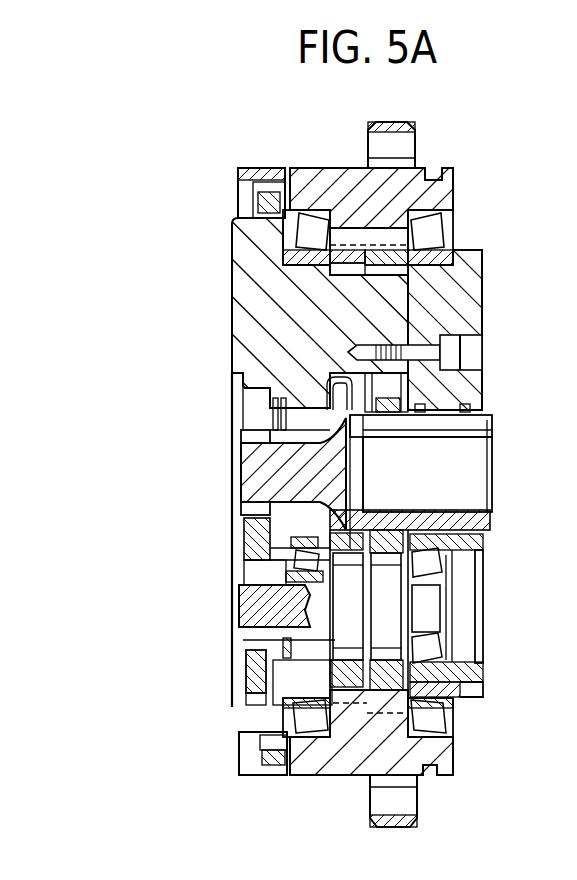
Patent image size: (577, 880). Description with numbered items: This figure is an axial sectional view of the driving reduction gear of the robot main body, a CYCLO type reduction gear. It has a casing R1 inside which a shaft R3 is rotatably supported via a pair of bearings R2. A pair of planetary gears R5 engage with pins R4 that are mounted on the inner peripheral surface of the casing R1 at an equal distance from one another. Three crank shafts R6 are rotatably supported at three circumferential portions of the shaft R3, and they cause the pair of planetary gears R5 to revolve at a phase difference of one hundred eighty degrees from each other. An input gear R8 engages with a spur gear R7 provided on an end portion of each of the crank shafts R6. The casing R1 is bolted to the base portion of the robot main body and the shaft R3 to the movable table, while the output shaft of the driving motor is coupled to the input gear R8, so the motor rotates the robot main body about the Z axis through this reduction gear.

The casing R1 is at (320, 185).
The bearings R2 is at (310, 208).
The shaft R3 is at (247, 348).
The pins R4 is at (393, 232).
The planetary gears R5 is at (356, 248).
The crank shafts R6 is at (432, 606).
The spur gear R7 is at (258, 700).
The input gear R8 is at (256, 467).